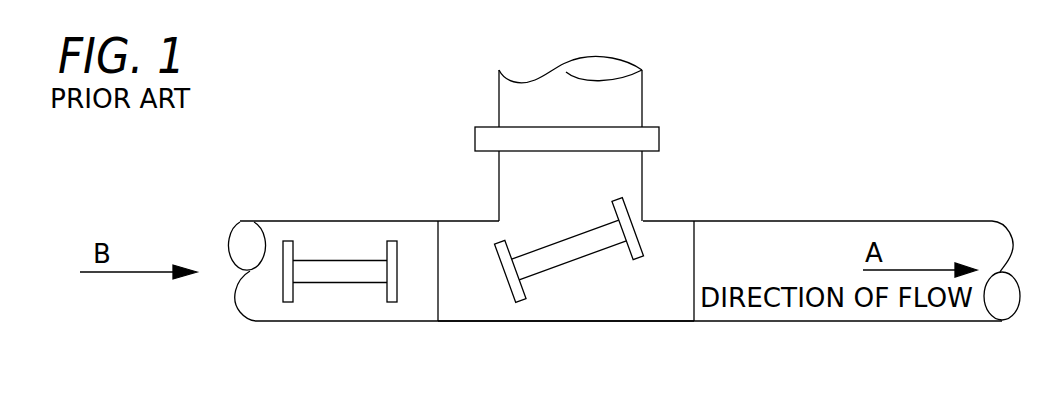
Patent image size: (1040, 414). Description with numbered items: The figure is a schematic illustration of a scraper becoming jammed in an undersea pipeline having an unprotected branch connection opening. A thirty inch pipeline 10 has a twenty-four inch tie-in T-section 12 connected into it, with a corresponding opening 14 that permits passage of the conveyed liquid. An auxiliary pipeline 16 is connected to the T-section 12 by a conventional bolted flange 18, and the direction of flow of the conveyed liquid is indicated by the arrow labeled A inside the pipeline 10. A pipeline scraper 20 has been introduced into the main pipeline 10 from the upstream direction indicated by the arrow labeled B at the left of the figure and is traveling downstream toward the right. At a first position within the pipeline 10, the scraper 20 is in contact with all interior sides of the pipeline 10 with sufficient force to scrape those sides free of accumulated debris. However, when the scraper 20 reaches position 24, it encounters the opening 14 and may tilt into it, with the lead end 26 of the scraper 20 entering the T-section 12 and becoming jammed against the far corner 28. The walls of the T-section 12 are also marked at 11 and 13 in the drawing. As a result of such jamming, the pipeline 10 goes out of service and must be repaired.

The pipeline 10 is at (625, 271).
The inlet wall of tee 11 is at (438, 303).
The tie-in T-section 12 is at (667, 322).
The outlet wall of tee 13 is at (695, 267).
The opening 14 is at (543, 210).
The auxiliary pipeline 16 is at (643, 88).
The bolted flange 18 is at (452, 137).
The pipeline scraper 20 is at (307, 310).
The position 24 is at (610, 254).
The lead end 26 is at (628, 229).
The far corner 28 is at (582, 300).